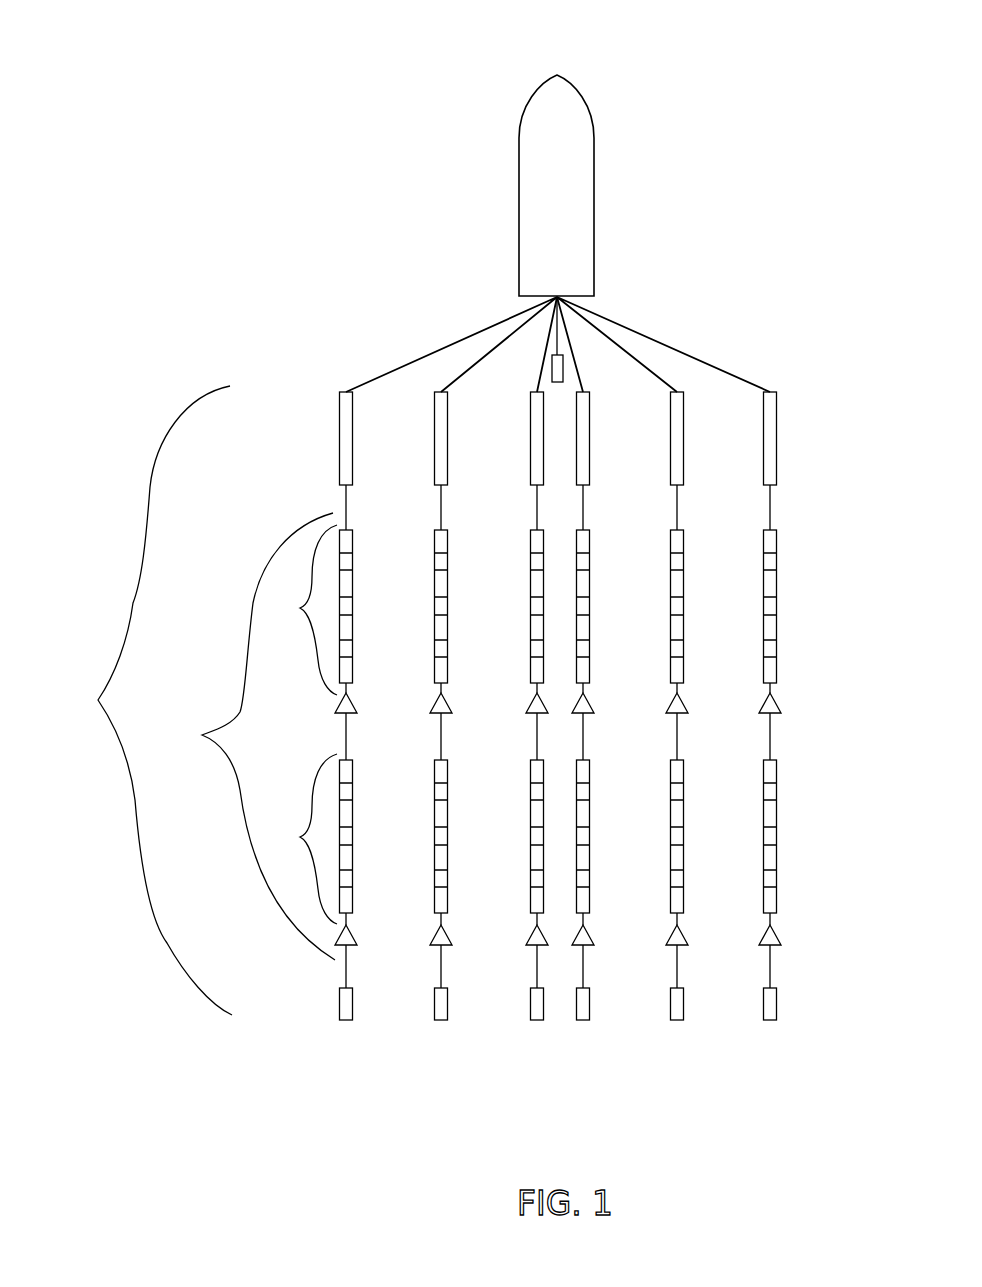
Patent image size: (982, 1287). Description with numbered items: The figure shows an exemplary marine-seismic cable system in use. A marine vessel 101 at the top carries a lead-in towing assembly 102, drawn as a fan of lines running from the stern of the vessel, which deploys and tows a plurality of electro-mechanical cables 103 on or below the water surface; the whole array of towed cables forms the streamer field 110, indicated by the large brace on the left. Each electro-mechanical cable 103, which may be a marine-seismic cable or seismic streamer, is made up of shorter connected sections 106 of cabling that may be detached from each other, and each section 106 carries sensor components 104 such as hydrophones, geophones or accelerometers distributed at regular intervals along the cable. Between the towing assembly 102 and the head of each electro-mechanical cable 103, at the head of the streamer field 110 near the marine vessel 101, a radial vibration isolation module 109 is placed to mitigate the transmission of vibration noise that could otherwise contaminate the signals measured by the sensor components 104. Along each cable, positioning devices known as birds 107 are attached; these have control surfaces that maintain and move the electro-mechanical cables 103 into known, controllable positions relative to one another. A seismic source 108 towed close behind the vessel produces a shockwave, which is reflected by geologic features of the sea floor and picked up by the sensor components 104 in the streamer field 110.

The marine vessel 101 is at (523, 123).
The lead-in towing assembly 102 is at (580, 380).
The electro-mechanical cable 103 is at (246, 736).
The sensor components 104 is at (353, 541).
The section 106 is at (298, 724).
The bird 107 is at (352, 705).
The seismic source 108 is at (565, 377).
The radial vibration isolation module 109 is at (353, 455).
The streamer field 110 is at (142, 700).